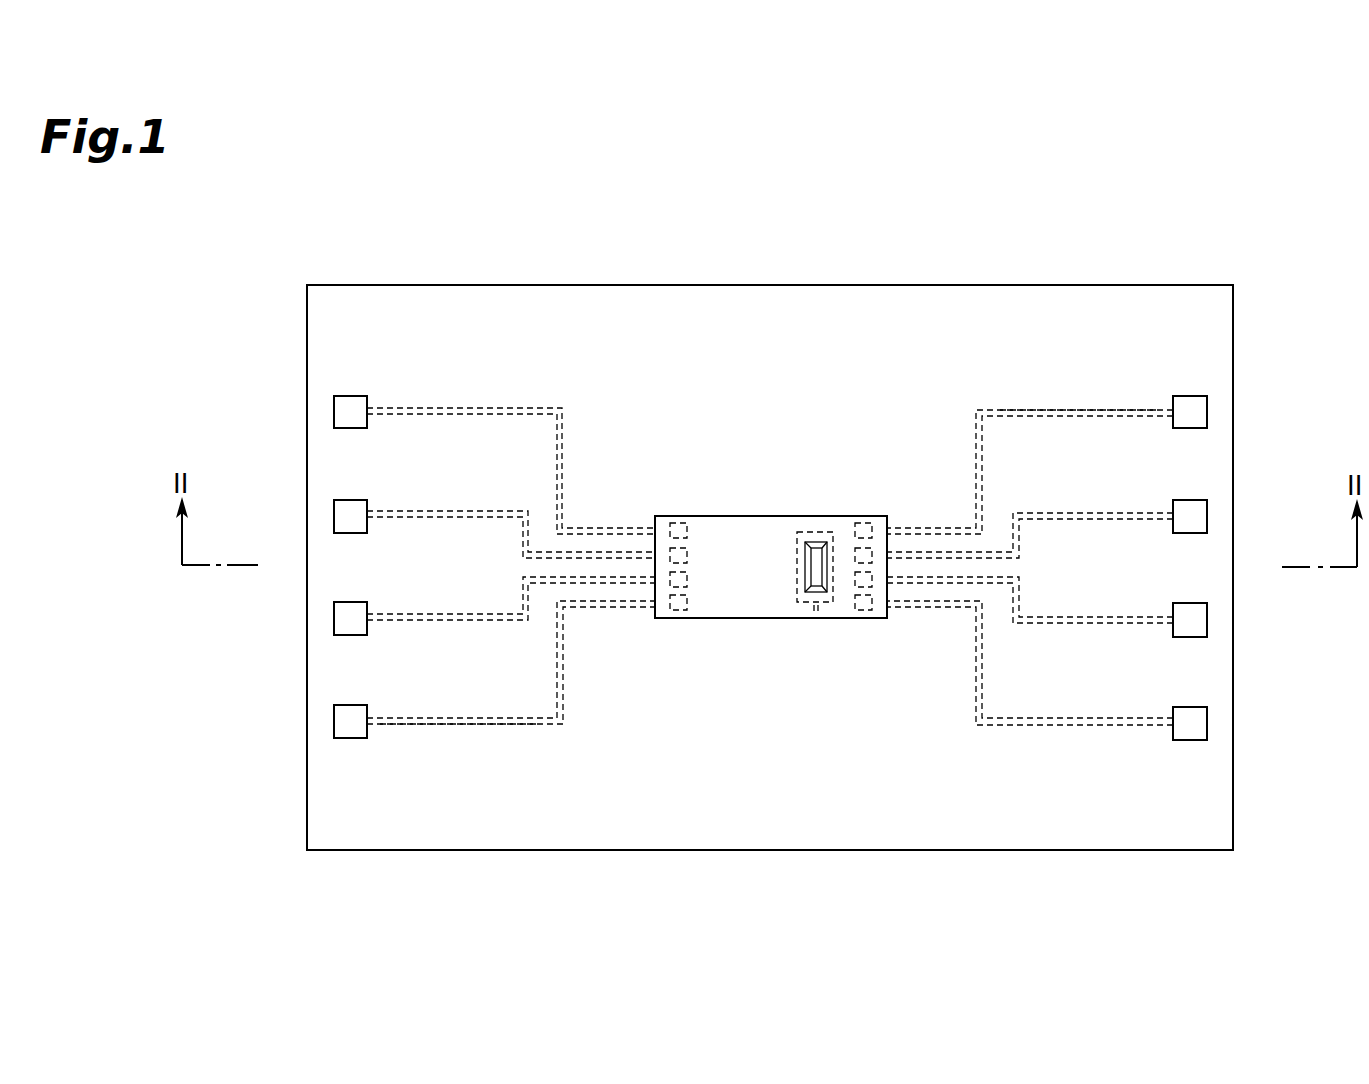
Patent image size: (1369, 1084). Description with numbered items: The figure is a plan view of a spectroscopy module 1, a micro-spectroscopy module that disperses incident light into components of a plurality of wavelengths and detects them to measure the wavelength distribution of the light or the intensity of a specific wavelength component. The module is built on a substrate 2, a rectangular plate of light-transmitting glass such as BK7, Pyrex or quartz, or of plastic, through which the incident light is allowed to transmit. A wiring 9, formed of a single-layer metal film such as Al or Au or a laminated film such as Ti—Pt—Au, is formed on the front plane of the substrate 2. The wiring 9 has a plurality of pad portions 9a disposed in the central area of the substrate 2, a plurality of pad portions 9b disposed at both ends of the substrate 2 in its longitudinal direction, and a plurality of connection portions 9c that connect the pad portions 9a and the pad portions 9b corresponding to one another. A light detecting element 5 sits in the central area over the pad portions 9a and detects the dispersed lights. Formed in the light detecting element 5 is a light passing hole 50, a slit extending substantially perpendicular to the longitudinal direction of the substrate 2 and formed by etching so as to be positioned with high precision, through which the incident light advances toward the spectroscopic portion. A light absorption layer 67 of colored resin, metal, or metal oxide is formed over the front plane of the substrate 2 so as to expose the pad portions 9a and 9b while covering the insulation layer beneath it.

The spectroscopy module 1 is at (1175, 243).
The substrate 2 is at (1233, 665).
The light detecting element 5 is at (771, 630).
The wiring 9 is at (432, 503).
The pad portions 9a is at (673, 618).
The pad portions 9b is at (350, 730).
The connection portions 9c is at (428, 727).
The light passing hole 50 is at (810, 545).
The light absorption layer 67 is at (1070, 822).